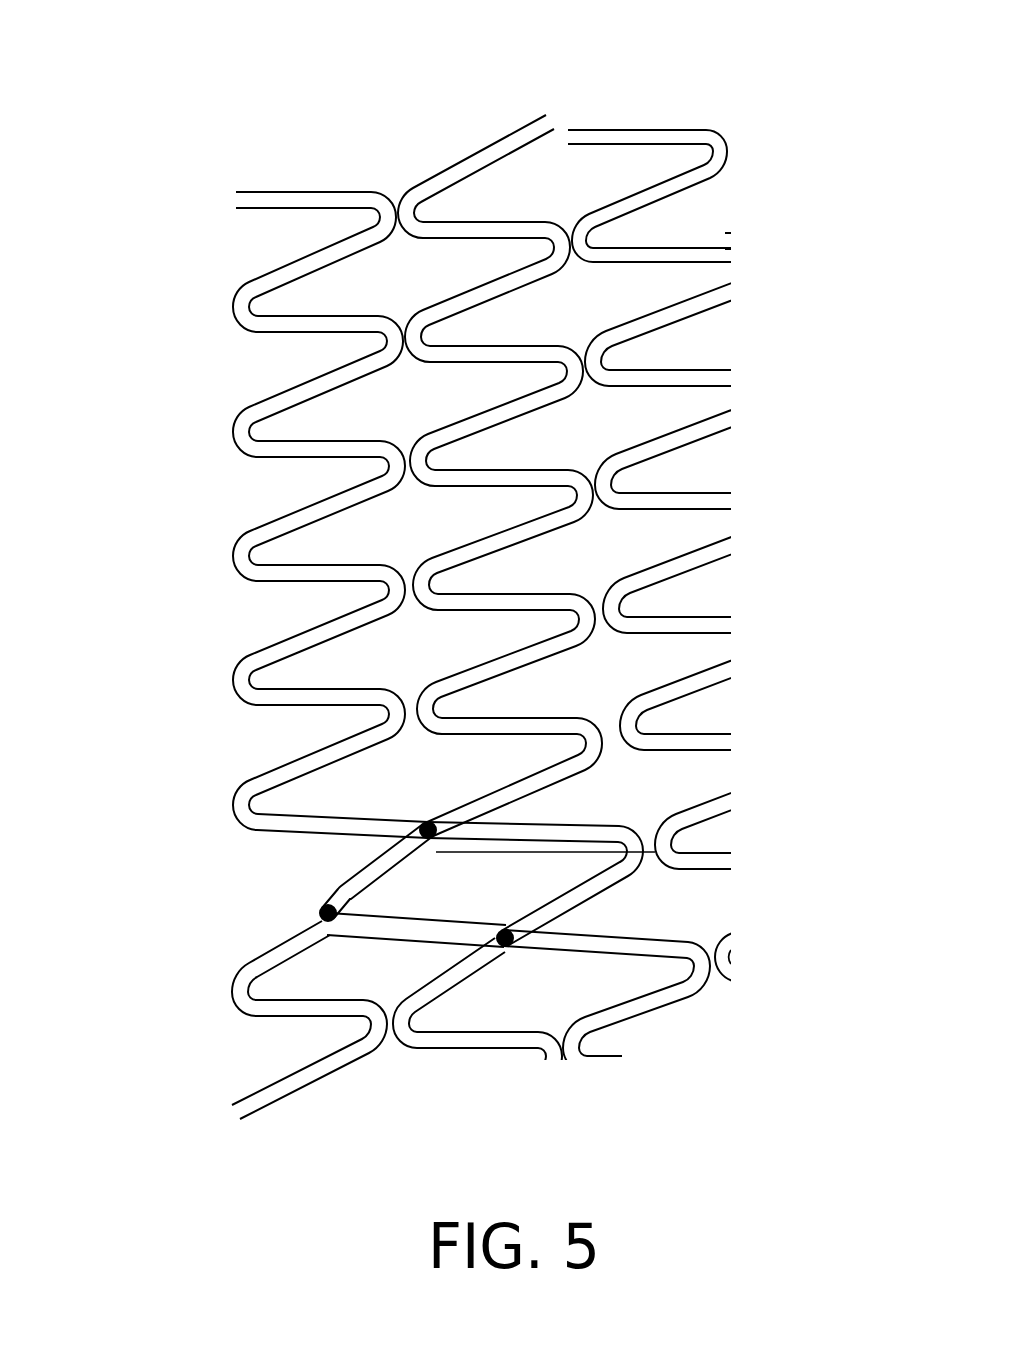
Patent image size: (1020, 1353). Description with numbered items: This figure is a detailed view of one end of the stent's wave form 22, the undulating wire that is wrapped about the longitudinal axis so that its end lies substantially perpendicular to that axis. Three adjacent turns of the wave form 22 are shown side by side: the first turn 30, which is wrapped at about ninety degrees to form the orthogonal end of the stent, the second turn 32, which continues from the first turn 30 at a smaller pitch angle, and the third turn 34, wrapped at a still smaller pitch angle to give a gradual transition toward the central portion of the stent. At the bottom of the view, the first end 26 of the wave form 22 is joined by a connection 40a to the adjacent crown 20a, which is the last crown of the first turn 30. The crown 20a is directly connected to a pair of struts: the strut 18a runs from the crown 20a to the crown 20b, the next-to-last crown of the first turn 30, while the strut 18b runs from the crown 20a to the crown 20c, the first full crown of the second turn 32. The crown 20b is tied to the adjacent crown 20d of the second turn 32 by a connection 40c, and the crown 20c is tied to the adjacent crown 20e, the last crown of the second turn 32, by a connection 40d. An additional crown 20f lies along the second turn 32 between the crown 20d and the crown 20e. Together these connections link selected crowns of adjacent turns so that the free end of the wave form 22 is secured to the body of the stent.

The wave form 22 is at (186, 271).
The first turn 30 is at (301, 152).
The second turn 32 is at (458, 122).
The third turn 34 is at (636, 90).
The strut 18a is at (360, 878).
The strut 18b is at (425, 928).
The crown 20a is at (346, 912).
The crown 20b is at (407, 826).
The crown 20c is at (499, 954).
The crown 20d is at (447, 826).
The crown 20e is at (525, 936).
The crown 20f is at (700, 848).
The first end 26 is at (318, 920).
The connection 40a is at (320, 906).
The connection 40c is at (434, 822).
The connection 40d is at (512, 945).